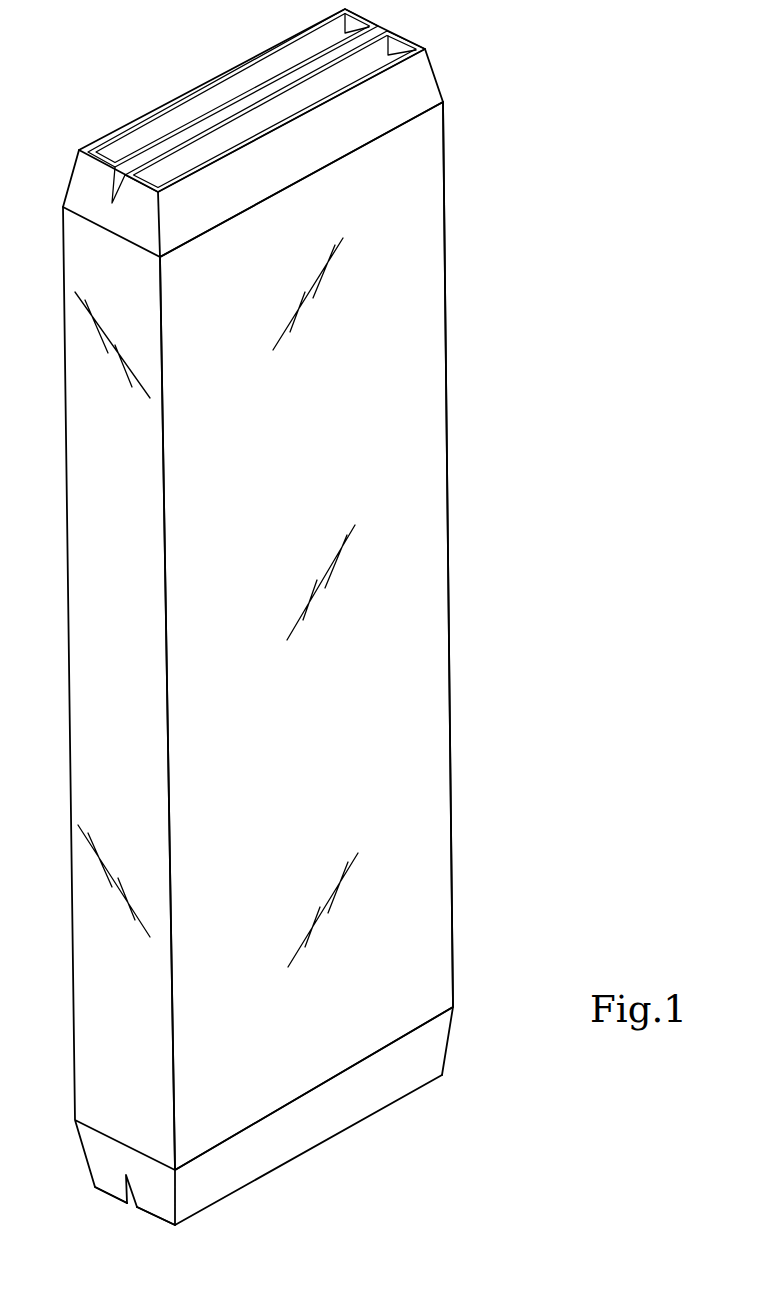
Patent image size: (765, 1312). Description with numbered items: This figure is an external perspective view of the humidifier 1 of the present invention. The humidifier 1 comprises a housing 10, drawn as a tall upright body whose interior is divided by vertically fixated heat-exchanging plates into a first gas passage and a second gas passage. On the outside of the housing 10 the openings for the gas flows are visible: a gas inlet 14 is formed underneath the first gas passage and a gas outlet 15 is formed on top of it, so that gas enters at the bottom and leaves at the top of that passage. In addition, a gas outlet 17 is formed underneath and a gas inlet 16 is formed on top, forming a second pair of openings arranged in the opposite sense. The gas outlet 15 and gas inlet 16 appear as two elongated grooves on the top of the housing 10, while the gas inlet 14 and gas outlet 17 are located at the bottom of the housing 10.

The humidifier 1 is at (552, 187).
The housing 10 is at (420, 460).
The gas inlet 14 is at (117, 1200).
The gas outlet 15 is at (147, 132).
The gas inlet 16 is at (310, 88).
The gas outlet 17 is at (153, 1218).